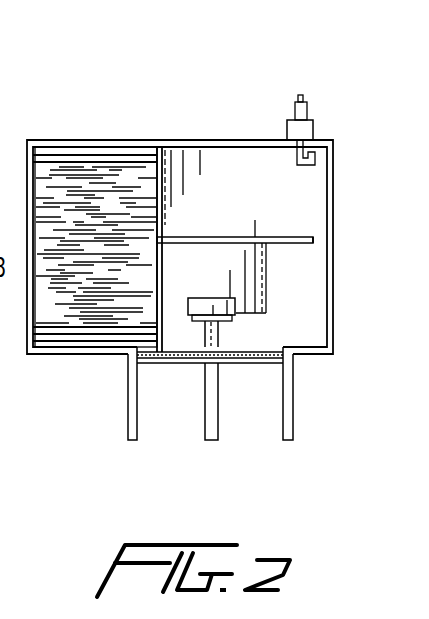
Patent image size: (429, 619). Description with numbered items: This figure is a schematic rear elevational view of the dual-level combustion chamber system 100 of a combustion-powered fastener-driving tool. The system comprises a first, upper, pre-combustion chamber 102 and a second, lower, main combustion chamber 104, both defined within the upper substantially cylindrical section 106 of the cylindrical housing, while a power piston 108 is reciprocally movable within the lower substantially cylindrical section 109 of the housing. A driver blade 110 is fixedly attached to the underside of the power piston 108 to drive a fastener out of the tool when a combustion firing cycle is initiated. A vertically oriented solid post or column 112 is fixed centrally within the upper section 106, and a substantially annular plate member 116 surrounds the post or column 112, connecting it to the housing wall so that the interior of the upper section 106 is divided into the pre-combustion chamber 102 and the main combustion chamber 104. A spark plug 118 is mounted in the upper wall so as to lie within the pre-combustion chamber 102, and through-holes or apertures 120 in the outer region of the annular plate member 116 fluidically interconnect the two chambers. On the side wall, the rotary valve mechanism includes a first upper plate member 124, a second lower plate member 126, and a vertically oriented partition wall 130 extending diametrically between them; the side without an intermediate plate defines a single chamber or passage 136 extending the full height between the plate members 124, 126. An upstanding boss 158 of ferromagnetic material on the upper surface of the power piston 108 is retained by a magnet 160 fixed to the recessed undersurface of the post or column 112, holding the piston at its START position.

The dual-level combustion chamber system 100 is at (211, 190).
The first, upper, pre-combustion chamber 102 is at (277, 168).
The second, lower, main combustion chamber 104 is at (280, 328).
The upper substantially cylindrical section 106 is at (333, 267).
The power piston 108 is at (163, 363).
The lower substantially cylindrical section 109 is at (128, 405).
The driver blade 110 is at (215, 430).
The solid post or column 112 is at (229, 207).
The substantially annular plate member 116 is at (287, 238).
The spark plug 118 is at (313, 120).
The through-holes or apertures 120 is at (317, 238).
The first upper plate member 124 is at (123, 143).
The second lower plate member 126 is at (77, 340).
The vertically oriented partition wall 130 is at (78, 225).
The single chamber or passage 136 is at (67, 173).
The upstanding boss 158 is at (203, 357).
The magnet 160 is at (213, 298).